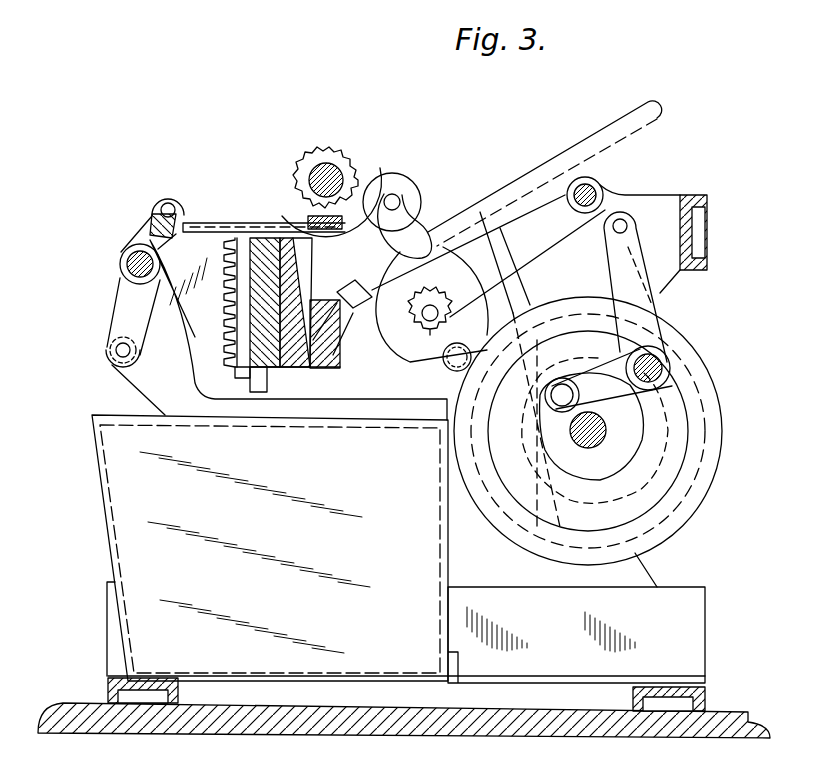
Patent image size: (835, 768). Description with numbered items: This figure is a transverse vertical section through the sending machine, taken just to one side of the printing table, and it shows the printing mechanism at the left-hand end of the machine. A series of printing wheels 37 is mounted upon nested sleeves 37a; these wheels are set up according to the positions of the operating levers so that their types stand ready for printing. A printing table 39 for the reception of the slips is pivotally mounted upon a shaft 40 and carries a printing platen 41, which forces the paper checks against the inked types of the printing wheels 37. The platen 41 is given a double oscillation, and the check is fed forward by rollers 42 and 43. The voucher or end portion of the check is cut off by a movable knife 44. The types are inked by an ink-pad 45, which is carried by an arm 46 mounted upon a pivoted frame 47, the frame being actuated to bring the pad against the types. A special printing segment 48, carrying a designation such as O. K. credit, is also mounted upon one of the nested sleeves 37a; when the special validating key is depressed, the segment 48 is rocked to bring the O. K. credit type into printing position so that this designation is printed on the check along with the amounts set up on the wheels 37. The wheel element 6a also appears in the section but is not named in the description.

The printing wheels 37 is at (342, 152).
The nested sleeves 37a is at (321, 160).
The printing table 39 is at (502, 192).
The shaft 40 is at (280, 260).
The printing platen 41 is at (602, 187).
The roller 42 is at (413, 192).
The roller 43 is at (459, 362).
The movable knife 44 is at (260, 237).
The ink-pad 45 is at (343, 227).
The arm 46 is at (197, 220).
The pivoted frame 47 is at (160, 207).
The special printing segment 48 is at (342, 198).
The wheel 6a is at (572, 427).